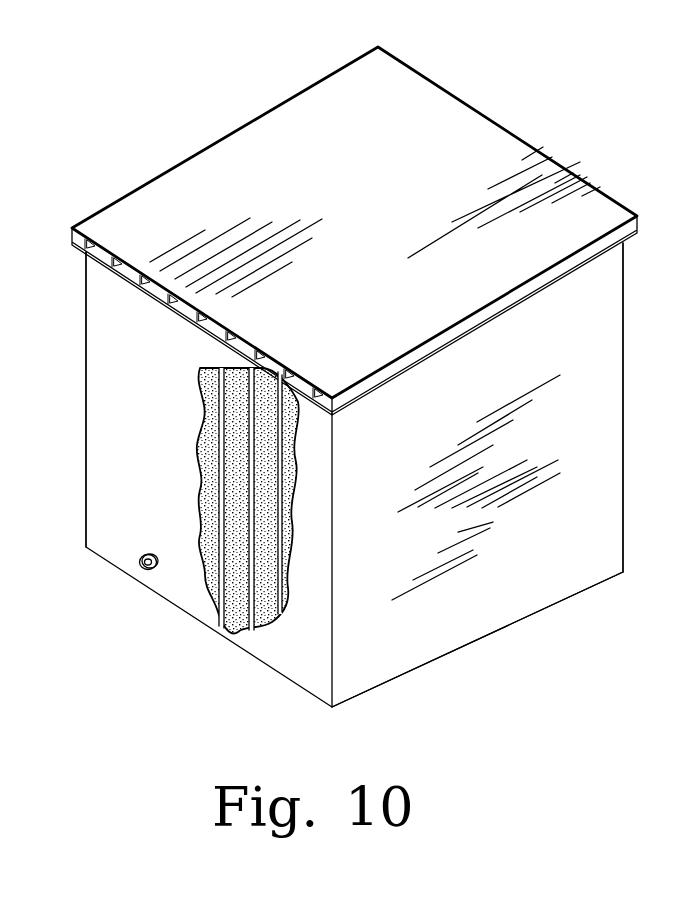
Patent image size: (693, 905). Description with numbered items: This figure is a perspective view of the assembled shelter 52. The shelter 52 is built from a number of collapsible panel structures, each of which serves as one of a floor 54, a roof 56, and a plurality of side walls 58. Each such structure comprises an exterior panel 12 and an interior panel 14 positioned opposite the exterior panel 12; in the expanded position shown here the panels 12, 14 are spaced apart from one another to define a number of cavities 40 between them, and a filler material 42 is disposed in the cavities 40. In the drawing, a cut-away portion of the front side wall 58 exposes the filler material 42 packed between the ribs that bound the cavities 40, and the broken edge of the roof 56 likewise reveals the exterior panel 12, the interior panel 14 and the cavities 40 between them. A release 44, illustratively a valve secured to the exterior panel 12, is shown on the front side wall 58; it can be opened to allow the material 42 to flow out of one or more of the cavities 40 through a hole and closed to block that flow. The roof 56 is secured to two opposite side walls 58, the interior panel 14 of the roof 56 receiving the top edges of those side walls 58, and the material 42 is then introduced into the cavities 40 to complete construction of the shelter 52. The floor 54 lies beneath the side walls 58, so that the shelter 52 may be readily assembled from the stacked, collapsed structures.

The exterior panel 12 is at (608, 208).
The interior panel 14 is at (633, 238).
The cavities 40 is at (212, 574).
The filler material 42 is at (238, 608).
The release 44 is at (138, 569).
The shelter 52 is at (110, 118).
The floor 54 is at (565, 600).
The roof 56 is at (422, 93).
The side walls 58 is at (117, 352).